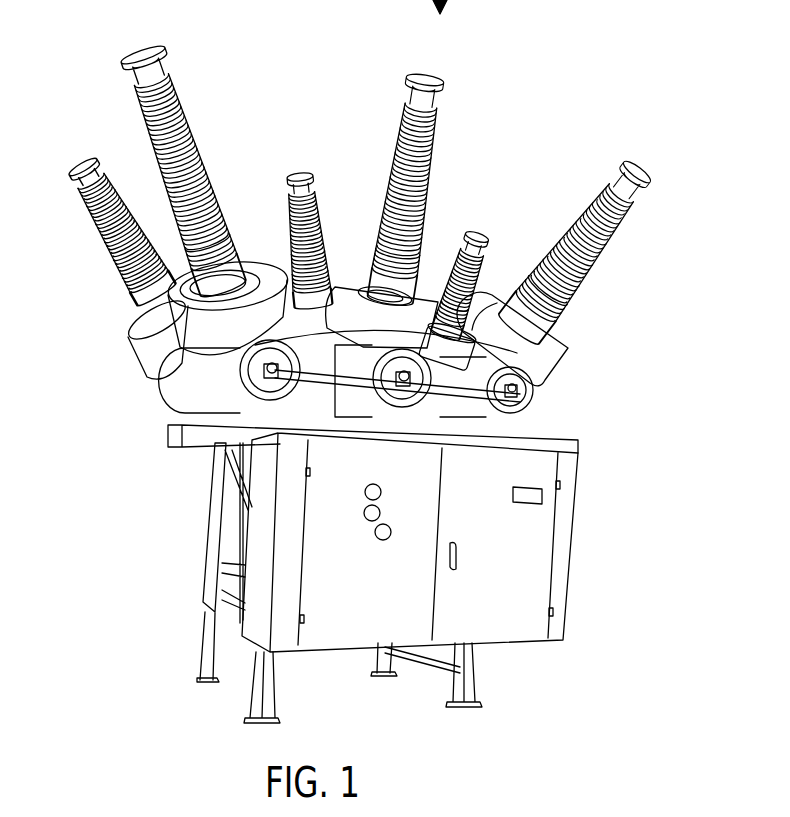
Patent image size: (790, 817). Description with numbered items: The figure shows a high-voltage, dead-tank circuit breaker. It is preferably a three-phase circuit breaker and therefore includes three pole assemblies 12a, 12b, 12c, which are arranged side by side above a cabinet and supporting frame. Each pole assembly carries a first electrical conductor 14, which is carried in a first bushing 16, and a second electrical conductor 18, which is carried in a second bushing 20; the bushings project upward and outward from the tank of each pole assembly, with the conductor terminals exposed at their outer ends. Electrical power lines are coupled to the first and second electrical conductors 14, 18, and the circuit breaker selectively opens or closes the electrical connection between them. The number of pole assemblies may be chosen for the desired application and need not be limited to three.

The pole assembly 12a is at (183, 390).
The pole assembly 12b is at (380, 428).
The pole assembly 12c is at (566, 352).
The first electrical conductor 14 is at (70, 185).
The first bushing 16 is at (118, 266).
The second electrical conductor 18 is at (166, 50).
The second bushing 20 is at (205, 147).